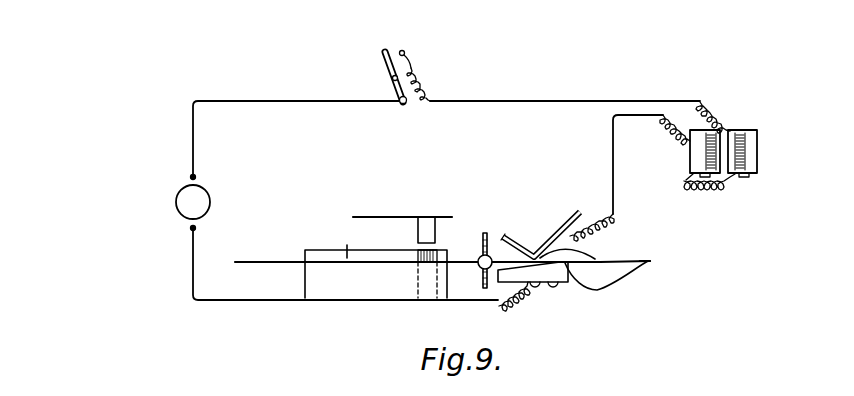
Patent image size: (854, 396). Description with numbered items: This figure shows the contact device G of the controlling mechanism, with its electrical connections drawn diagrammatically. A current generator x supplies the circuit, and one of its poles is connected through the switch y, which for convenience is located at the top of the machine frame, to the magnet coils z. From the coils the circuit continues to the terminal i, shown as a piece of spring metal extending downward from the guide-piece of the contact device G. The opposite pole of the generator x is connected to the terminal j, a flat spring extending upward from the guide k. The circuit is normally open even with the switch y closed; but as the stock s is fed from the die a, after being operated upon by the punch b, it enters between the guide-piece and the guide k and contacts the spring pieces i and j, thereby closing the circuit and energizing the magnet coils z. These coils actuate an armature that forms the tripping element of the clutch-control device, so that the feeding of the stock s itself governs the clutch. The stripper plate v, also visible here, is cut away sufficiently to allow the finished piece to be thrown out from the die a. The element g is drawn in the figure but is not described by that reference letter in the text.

The current generator x is at (193, 203).
The switch y is at (407, 60).
The magnet coils z is at (689, 152).
The die a is at (376, 274).
The punch b is at (436, 232).
The stock s is at (256, 263).
The contact device G is at (660, 255).
The stripper plate v is at (341, 241).
The bent contact spring g is at (535, 250).
The terminal i is at (588, 253).
The terminal j is at (614, 276).
The guide k is at (558, 281).